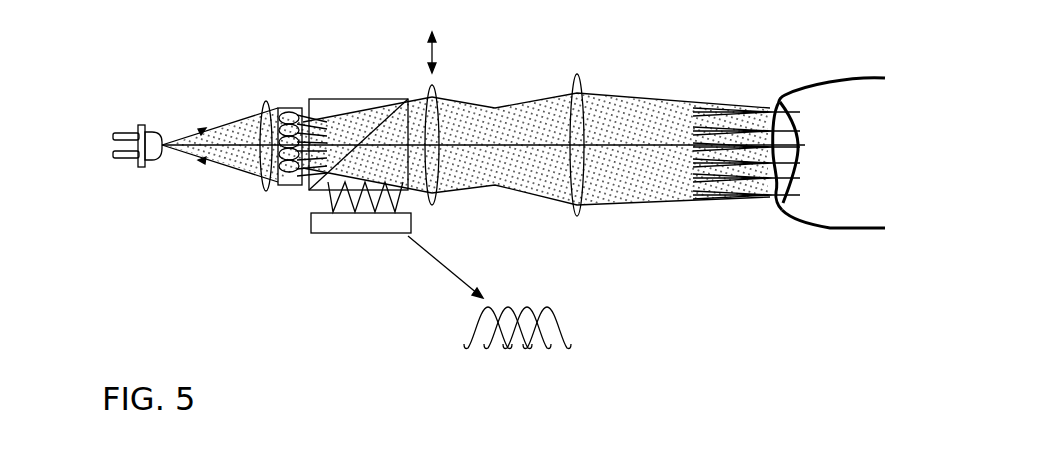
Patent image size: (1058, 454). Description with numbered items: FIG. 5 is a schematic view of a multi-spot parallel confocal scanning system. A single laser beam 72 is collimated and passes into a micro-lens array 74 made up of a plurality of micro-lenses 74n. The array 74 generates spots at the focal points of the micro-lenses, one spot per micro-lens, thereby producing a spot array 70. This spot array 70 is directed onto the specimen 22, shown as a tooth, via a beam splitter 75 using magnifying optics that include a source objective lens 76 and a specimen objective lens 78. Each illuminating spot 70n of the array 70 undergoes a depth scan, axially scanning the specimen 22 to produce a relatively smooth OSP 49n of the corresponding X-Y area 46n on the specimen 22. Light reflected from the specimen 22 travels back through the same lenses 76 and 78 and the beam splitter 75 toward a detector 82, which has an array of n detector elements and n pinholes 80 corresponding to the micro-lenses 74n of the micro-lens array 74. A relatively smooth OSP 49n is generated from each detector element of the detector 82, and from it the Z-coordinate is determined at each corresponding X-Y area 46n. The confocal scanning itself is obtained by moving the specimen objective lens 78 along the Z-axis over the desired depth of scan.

The specimen 22 is at (822, 230).
The X-Y area 46n is at (790, 158).
The OSP 49n is at (558, 328).
The spot array 70 is at (769, 206).
The illuminating spot 70n is at (760, 130).
The laser beam 72 is at (215, 126).
The micro-lens array 74 is at (286, 107).
The micro-lens 74n is at (305, 121).
The beam splitter 75 is at (388, 98).
The source objective lens 76 is at (433, 206).
The specimen objective lens 78 is at (578, 217).
The pinholes 80 is at (407, 200).
The detector 82 is at (322, 236).